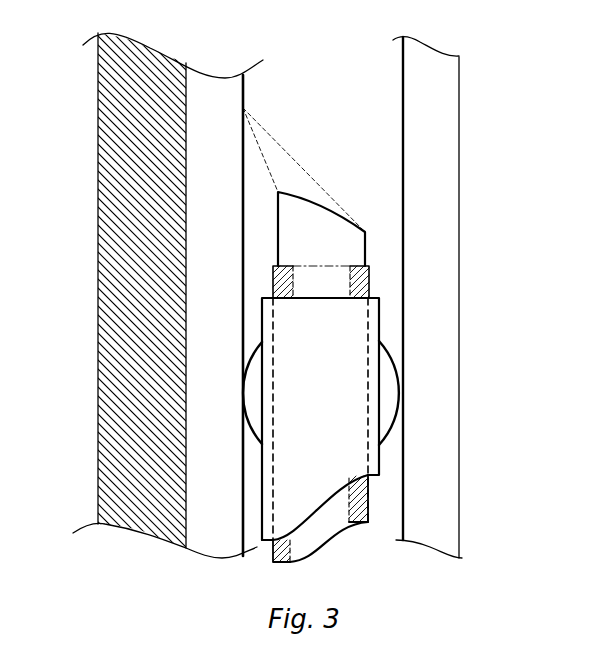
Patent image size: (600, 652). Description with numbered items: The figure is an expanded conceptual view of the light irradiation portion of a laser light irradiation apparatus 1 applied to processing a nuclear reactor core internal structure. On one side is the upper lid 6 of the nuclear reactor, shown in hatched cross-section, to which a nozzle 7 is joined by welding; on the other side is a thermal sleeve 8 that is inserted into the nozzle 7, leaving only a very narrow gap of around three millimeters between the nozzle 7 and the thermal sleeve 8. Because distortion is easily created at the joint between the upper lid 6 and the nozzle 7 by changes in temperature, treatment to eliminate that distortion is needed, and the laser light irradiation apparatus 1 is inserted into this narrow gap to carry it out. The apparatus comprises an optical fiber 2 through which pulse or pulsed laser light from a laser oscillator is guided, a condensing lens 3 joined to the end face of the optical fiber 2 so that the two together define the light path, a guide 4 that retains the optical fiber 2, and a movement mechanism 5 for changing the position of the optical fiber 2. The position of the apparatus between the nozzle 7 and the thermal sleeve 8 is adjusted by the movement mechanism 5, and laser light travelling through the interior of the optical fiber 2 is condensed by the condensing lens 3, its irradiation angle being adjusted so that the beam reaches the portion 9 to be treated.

The laser light irradiation apparatus 1 is at (392, 400).
The optical fiber 2 is at (342, 515).
The condensing lens 3 is at (355, 250).
The guide 4 is at (355, 325).
The movement mechanism 5 is at (385, 400).
The upper lid 6 is at (140, 222).
The nozzle 7 is at (195, 305).
The thermal sleeve 8 is at (428, 165).
The portion to be treated 9 is at (243, 108).